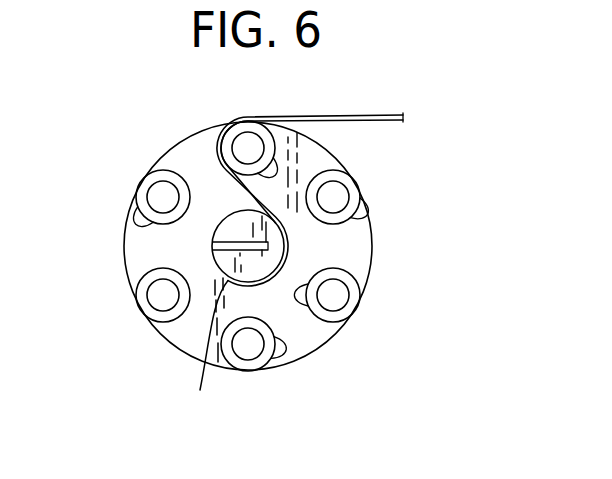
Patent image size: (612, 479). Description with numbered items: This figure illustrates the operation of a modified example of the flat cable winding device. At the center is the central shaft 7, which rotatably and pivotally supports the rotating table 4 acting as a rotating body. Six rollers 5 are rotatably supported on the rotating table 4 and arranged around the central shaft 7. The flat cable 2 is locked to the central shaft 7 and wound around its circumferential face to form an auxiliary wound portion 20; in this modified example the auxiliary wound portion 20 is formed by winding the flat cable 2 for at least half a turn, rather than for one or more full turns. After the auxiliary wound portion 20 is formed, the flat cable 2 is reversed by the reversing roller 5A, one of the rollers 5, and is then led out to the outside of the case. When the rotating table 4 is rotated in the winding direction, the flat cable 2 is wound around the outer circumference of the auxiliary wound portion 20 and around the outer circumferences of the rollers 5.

The flat cable 2 is at (340, 115).
The rotating table 4 is at (182, 335).
The rollers 5 is at (136, 224).
The reversing roller 5A is at (270, 173).
The central shaft 7 is at (237, 221).
The auxiliary wound portion 20 is at (200, 390).